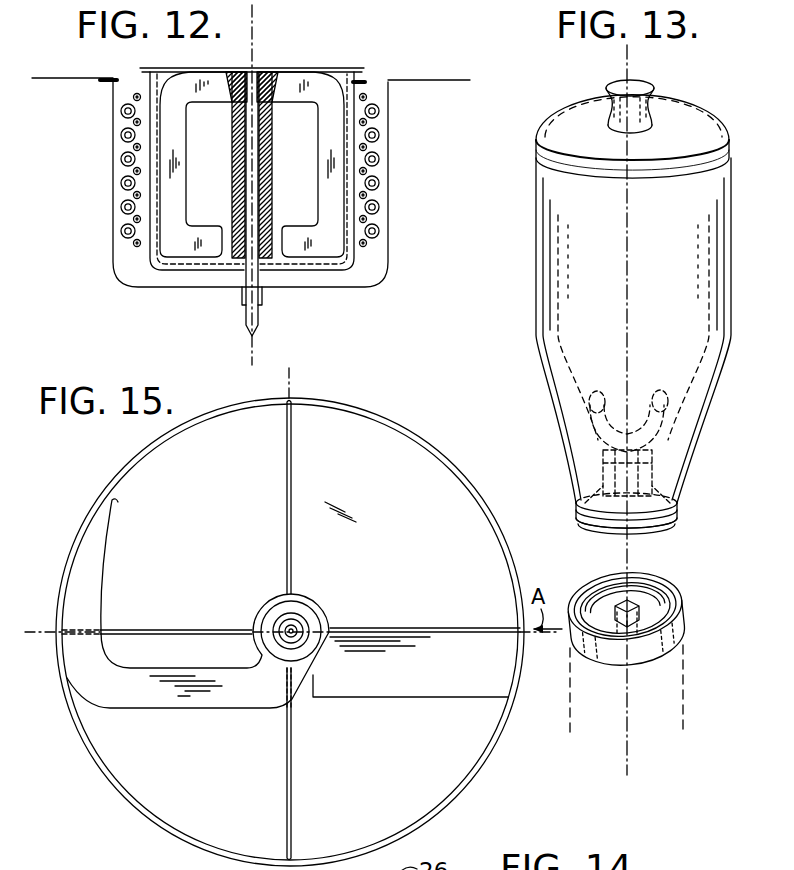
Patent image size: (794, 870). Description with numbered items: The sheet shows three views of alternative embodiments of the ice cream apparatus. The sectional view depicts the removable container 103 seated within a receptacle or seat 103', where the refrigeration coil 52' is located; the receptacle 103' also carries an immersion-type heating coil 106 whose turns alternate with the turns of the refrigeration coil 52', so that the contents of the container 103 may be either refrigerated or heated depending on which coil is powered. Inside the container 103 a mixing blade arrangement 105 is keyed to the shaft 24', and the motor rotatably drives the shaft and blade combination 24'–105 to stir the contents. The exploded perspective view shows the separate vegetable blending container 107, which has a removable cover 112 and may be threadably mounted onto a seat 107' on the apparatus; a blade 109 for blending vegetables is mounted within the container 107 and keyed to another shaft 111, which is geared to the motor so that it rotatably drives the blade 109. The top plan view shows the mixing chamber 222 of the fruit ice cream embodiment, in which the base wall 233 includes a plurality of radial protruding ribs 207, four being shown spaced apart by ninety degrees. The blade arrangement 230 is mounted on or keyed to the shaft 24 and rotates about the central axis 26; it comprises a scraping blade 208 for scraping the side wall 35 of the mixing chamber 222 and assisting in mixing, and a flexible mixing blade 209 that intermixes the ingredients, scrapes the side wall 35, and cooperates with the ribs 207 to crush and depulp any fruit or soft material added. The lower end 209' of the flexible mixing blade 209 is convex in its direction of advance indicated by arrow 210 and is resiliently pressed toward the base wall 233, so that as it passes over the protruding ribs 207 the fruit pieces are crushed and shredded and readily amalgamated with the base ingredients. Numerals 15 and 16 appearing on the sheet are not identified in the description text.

In FIG. 12, the central axis 26 is at (258, 44).
In FIG. 15, the central axis 26 is at (300, 622).
In FIG. 12, the mixing blade arrangement 105 is at (305, 80).
In FIG. 12, the container 103 is at (290, 153).
In FIG. 12, the immersion-type heating coil 106 is at (367, 99).
In FIG. 12, the coil 52' is at (247, 171).
In FIG. 12, the receptacle or seat 103' is at (288, 184).
In FIG. 12, the shaft 24' is at (283, 204).
In FIG. 13, the removable cover 112 is at (681, 117).
In FIG. 13, the container 107 is at (583, 311).
In FIG. 13, the blade 109 is at (665, 412).
In FIG. 13, the bottom rim 15 is at (672, 518).
In FIG. 13, the shaft 111 is at (655, 610).
In FIG. 13, the seat 107' is at (663, 649).
In FIG. 15, the mixing chamber 222 is at (122, 469).
In FIG. 15, the base wall 233 is at (205, 531).
In FIG. 15, the radial protruding ribs 207 is at (291, 455).
In FIG. 15, the arrow 210 is at (320, 497).
In FIG. 15, the shaft 24 is at (272, 611).
In FIG. 15, the blade arrangement 230 is at (336, 620).
In FIG. 15, the flexible mixing blade 209 is at (425, 622).
In FIG. 15, the section line 16 is at (38, 636).
In FIG. 15, the scraping blade 208 is at (165, 710).
In FIG. 15, the lower end 209' is at (410, 709).
In FIG. 15, the side wall 35 is at (194, 834).